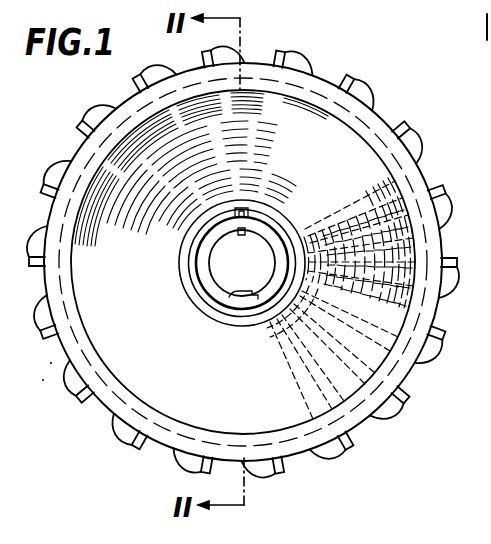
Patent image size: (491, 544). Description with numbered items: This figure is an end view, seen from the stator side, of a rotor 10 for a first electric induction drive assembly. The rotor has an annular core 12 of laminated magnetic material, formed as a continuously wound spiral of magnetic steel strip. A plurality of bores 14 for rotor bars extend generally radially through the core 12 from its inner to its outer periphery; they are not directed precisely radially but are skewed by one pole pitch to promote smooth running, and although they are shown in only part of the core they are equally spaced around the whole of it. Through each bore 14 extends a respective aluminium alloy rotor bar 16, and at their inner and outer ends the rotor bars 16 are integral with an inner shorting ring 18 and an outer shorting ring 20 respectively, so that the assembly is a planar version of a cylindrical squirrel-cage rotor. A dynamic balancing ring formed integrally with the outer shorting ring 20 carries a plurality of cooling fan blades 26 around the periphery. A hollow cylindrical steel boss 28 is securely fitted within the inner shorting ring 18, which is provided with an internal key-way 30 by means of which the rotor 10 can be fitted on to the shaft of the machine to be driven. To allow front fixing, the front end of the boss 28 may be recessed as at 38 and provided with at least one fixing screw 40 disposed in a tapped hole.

The rotor 10 is at (436, 148).
The annular core 12 is at (297, 144).
The bores 14 is at (306, 382).
The rotor bar 16 is at (292, 344).
The inner shorting ring 18 is at (182, 279).
The outer shorting ring 20 is at (410, 182).
The cooling fan blades 26 is at (423, 361).
The hollow cylindrical steel boss 28 is at (213, 240).
The internal key-way 30 is at (230, 297).
The recess 38 is at (277, 220).
The fixing screw 40 is at (239, 208).